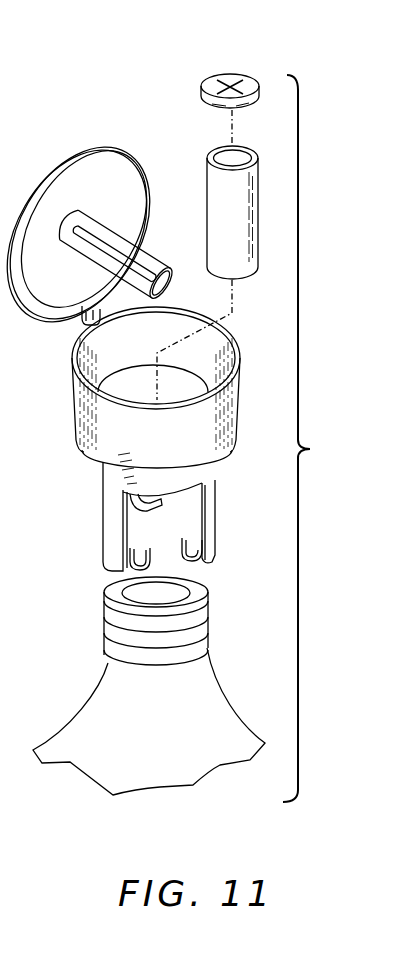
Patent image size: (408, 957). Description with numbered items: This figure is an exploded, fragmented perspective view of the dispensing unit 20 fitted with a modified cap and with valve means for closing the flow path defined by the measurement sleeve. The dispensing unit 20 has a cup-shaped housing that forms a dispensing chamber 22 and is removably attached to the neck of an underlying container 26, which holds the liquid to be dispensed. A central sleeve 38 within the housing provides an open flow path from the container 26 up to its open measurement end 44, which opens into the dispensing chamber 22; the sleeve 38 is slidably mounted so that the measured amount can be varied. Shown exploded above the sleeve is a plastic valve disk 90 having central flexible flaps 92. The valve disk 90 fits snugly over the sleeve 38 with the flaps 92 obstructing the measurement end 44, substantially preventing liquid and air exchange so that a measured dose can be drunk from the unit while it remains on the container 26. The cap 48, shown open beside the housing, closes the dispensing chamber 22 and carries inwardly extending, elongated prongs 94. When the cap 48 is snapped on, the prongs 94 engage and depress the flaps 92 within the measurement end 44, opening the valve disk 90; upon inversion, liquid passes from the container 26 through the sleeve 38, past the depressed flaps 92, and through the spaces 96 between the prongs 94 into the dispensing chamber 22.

The dispensing unit 20 is at (82, 467).
The dispensing chamber 22 is at (113, 362).
The container 26 is at (93, 715).
The central sleeve 38 is at (240, 221).
The measurement end 44 is at (248, 146).
The cap 48 is at (37, 197).
The valve disk 90 is at (202, 101).
The flexible flaps 92 is at (218, 80).
The prongs 94 is at (140, 253).
The spaces 96 is at (86, 238).